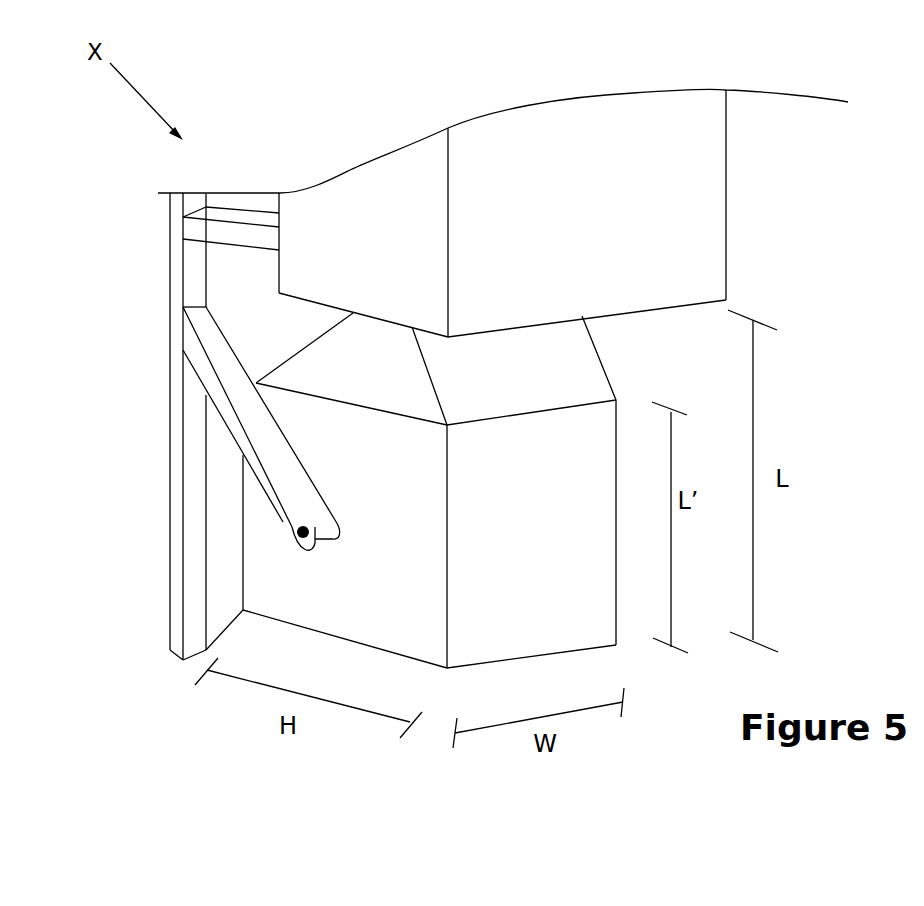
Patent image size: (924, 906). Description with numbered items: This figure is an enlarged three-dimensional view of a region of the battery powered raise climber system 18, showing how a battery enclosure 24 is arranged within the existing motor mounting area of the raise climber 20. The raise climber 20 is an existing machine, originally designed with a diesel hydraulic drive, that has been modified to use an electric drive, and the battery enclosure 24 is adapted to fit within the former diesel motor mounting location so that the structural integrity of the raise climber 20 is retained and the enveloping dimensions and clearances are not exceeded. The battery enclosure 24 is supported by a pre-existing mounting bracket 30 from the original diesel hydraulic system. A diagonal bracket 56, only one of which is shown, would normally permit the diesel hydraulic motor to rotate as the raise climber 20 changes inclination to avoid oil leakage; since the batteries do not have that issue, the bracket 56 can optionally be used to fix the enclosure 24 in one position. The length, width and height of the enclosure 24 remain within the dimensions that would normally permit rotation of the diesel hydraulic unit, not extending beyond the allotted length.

The battery powered raise climber system 18 is at (786, 279).
The raise climber 20 is at (688, 203).
The battery enclosure 24 is at (544, 582).
The mounting bracket 30 is at (183, 552).
The diagonal bracket 56 is at (280, 483).